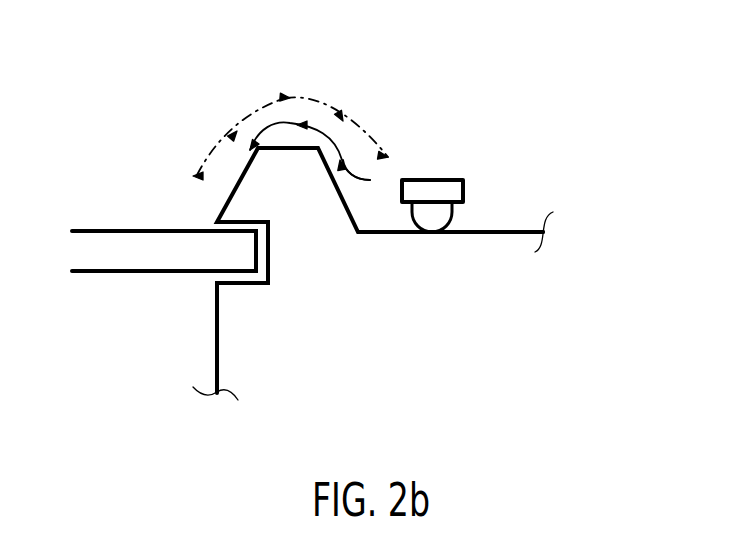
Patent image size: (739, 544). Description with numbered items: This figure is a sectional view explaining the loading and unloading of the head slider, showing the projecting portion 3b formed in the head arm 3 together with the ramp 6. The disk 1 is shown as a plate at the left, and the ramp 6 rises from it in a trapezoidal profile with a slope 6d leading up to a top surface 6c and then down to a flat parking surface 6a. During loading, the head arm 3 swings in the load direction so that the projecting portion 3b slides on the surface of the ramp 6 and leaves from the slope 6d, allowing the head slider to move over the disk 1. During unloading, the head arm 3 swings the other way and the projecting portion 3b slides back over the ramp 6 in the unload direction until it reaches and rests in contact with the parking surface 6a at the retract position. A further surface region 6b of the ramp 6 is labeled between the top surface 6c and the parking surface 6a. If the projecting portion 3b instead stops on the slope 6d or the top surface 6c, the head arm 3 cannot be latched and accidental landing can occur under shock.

The disk 1 is at (131, 229).
The head arm 3 is at (432, 188).
The projecting portion 3b is at (427, 220).
The ramp 6 is at (298, 217).
The parking surface 6a is at (488, 228).
The air flow path (inner) 6b is at (343, 183).
The top surface 6c is at (288, 148).
The slope 6d is at (238, 175).